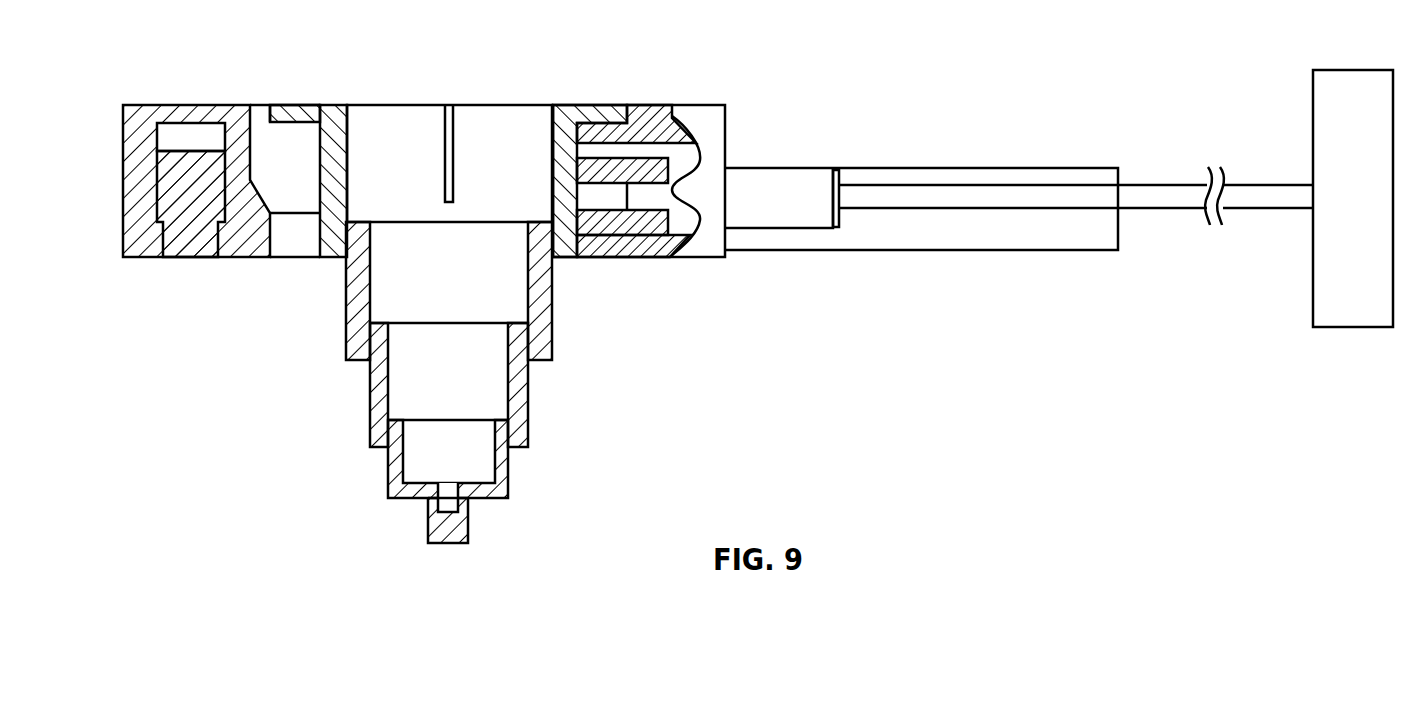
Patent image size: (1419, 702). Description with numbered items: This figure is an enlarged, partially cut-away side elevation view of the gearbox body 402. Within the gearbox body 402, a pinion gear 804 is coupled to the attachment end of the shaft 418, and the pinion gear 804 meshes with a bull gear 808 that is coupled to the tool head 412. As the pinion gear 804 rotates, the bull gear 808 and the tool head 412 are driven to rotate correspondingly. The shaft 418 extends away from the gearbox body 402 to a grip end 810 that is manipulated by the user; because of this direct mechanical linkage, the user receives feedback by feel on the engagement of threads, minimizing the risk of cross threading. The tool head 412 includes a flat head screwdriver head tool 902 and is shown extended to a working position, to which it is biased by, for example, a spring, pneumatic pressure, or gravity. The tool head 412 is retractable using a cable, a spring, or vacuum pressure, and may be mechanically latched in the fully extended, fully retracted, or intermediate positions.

The gearbox body 402 is at (231, 104).
The tool head 412 is at (357, 405).
The shaft 418 is at (1012, 195).
The pinion gear 804 is at (628, 190).
The bull gear 808 is at (608, 218).
The grip end 810 is at (1353, 70).
The flat head screwdriver head tool 902 is at (473, 549).